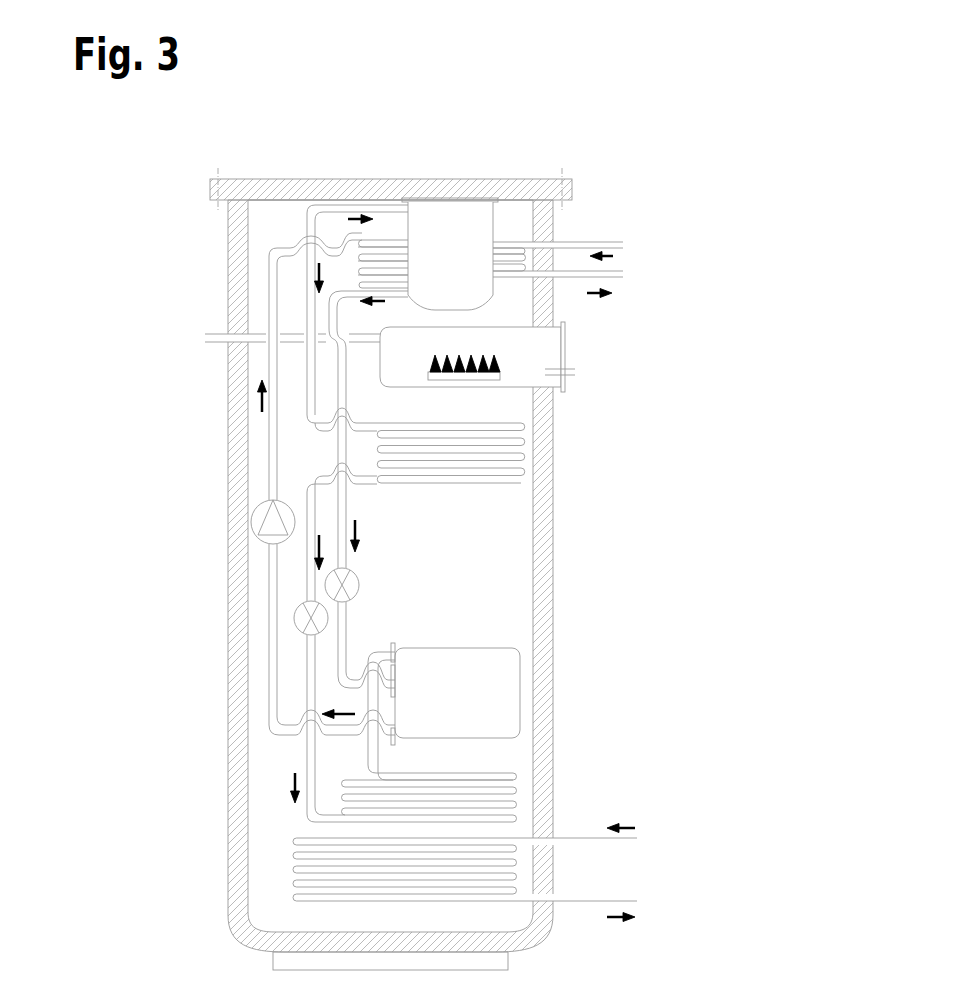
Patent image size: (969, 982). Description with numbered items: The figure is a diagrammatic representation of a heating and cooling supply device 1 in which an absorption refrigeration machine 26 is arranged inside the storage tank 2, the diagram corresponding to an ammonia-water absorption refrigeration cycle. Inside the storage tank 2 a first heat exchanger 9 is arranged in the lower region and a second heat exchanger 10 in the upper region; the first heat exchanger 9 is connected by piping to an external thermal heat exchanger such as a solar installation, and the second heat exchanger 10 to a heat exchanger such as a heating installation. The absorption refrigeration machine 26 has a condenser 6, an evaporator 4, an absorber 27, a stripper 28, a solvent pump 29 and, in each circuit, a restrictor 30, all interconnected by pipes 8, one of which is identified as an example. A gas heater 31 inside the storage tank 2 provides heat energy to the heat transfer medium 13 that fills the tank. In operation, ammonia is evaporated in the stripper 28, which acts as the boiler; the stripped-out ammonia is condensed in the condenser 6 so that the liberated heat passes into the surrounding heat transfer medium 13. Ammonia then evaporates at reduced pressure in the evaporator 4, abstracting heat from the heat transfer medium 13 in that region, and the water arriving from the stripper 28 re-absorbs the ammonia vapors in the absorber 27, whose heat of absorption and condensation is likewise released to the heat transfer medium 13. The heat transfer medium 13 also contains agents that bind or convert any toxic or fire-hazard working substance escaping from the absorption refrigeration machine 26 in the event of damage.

The heating and cooling supply device 1 is at (447, 143).
The storage tank 2 is at (373, 180).
The evaporator 4 is at (493, 793).
The condenser 6 is at (510, 445).
The pipes 8 is at (272, 690).
The first heat exchanger 9 is at (320, 870).
The second heat exchanger 10 is at (502, 253).
The heat transfer medium 13 is at (260, 903).
The absorption refrigeration machine 26 is at (525, 578).
The absorber 27 is at (480, 695).
The stripper 28 is at (460, 285).
The solvent pump 29 is at (252, 508).
The restrictor 30 is at (293, 616).
The gas heater 31 is at (545, 344).